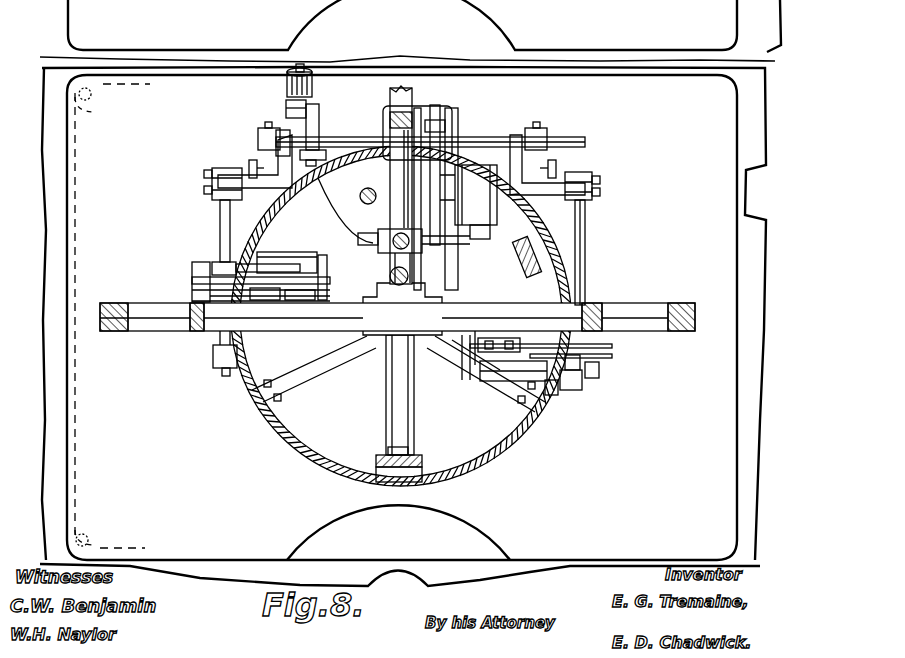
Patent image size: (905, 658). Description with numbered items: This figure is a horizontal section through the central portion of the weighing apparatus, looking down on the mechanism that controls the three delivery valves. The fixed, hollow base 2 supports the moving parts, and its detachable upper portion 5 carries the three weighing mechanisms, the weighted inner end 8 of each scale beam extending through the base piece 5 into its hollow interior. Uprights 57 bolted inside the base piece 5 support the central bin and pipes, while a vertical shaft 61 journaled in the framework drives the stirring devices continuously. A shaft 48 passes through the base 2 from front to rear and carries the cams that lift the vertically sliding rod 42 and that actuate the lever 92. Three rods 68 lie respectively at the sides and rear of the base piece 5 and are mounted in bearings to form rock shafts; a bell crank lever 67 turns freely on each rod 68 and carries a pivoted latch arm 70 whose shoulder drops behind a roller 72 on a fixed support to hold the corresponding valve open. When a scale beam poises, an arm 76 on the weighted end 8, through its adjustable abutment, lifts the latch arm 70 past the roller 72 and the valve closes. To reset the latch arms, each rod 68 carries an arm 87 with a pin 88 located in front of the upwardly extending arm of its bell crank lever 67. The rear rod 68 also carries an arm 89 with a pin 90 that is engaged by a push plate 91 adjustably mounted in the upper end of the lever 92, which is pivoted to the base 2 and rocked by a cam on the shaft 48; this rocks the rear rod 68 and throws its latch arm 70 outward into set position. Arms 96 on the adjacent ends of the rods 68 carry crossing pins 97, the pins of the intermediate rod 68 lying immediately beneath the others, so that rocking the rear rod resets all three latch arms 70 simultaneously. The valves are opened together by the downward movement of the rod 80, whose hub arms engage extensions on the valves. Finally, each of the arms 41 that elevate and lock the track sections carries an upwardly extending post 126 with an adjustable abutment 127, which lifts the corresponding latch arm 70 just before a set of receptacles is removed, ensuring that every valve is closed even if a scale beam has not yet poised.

The base 2 is at (46, 314).
The upper portion of the base 5 is at (500, 440).
The inner end of the scale beam 8 is at (405, 135).
The arms 41 is at (400, 100).
The rod 42 is at (398, 328).
The shaft 48 is at (390, 430).
The uprights 57 is at (522, 248).
The vertical shaft 61 is at (359, 196).
The bell crank lever 67 is at (605, 358).
The rod 68 is at (490, 137).
The latch arm 70 is at (322, 289).
The roller 72 is at (338, 263).
The arm 76 is at (510, 364).
The rod 80 is at (420, 252).
The arm 87 is at (584, 378).
The pin 88 is at (554, 392).
The arm 89 is at (319, 132).
The pin 90 is at (286, 112).
The push plate 91 is at (319, 110).
The lever 92 is at (287, 84).
The arms 96 is at (598, 156).
The crossing pins 97 is at (248, 165).
The post 126 is at (500, 338).
The abutment 127 is at (480, 362).